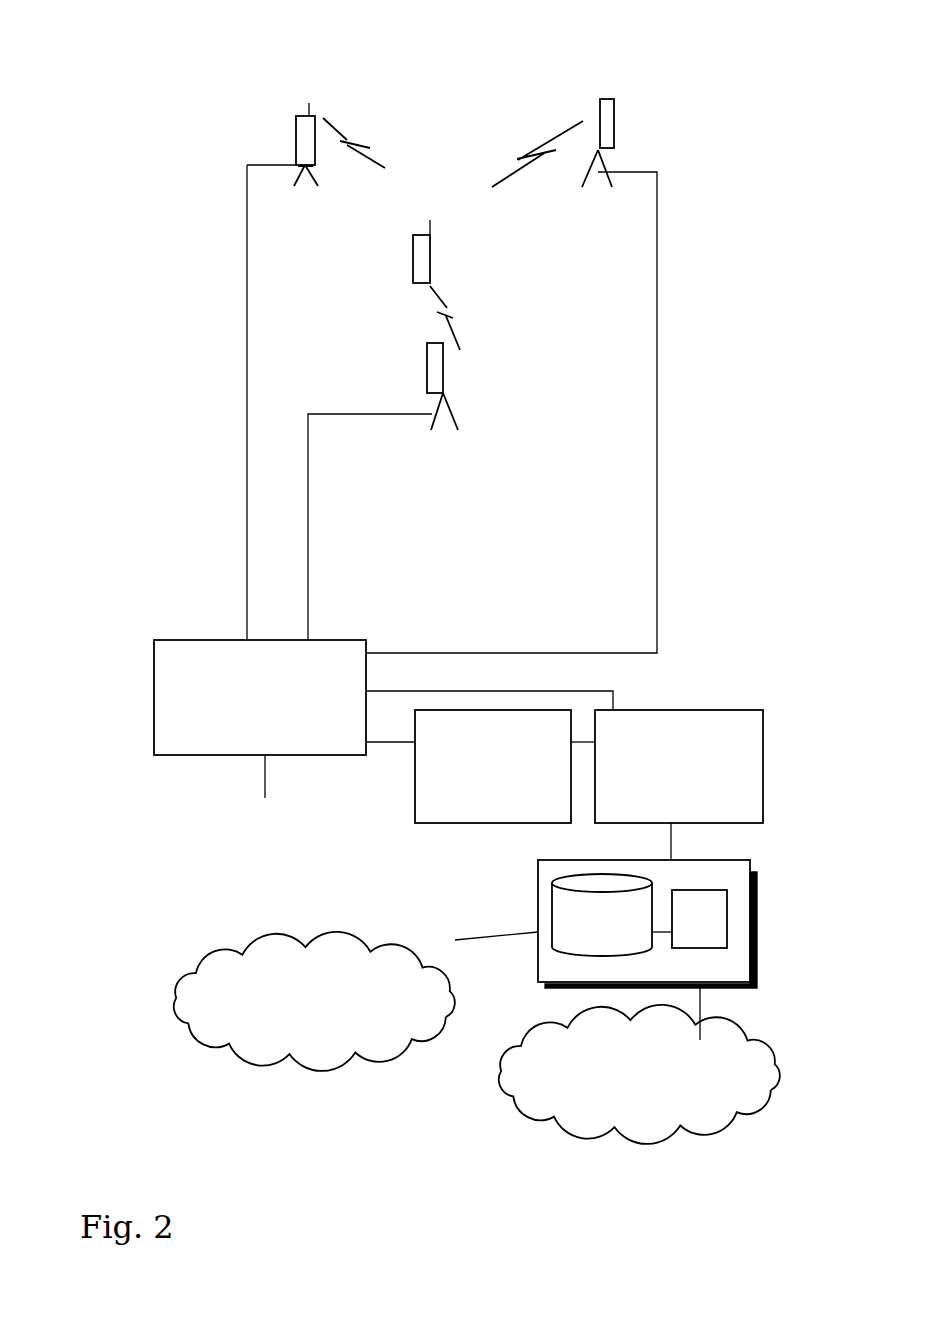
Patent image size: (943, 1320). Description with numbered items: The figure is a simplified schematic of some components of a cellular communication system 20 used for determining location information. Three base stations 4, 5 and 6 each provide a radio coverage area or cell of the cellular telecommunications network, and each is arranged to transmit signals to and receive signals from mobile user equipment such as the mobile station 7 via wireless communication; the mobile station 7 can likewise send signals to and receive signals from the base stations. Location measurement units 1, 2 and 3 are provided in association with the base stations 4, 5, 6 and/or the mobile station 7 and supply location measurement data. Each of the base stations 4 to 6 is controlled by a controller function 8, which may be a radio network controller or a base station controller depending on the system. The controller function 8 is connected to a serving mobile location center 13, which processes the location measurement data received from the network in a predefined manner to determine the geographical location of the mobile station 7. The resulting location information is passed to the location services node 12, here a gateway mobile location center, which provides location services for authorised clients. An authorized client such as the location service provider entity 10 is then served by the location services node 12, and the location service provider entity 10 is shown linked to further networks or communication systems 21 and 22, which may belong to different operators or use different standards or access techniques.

The location measurement unit 1 is at (295, 114).
The location measurement unit 2 is at (620, 121).
The location measurement unit 3 is at (427, 392).
The base station 4 is at (296, 142).
The base station 5 is at (618, 183).
The base station 6 is at (432, 428).
The mobile station 7 is at (420, 267).
The controller function 8 is at (240, 723).
The location service provider entity 10 is at (757, 932).
The location services node 12 is at (717, 728).
The serving mobile location center 13 is at (437, 812).
The communication system 20 is at (545, 93).
The communication system 21 is at (485, 950).
The communication system 22 is at (639, 1074).